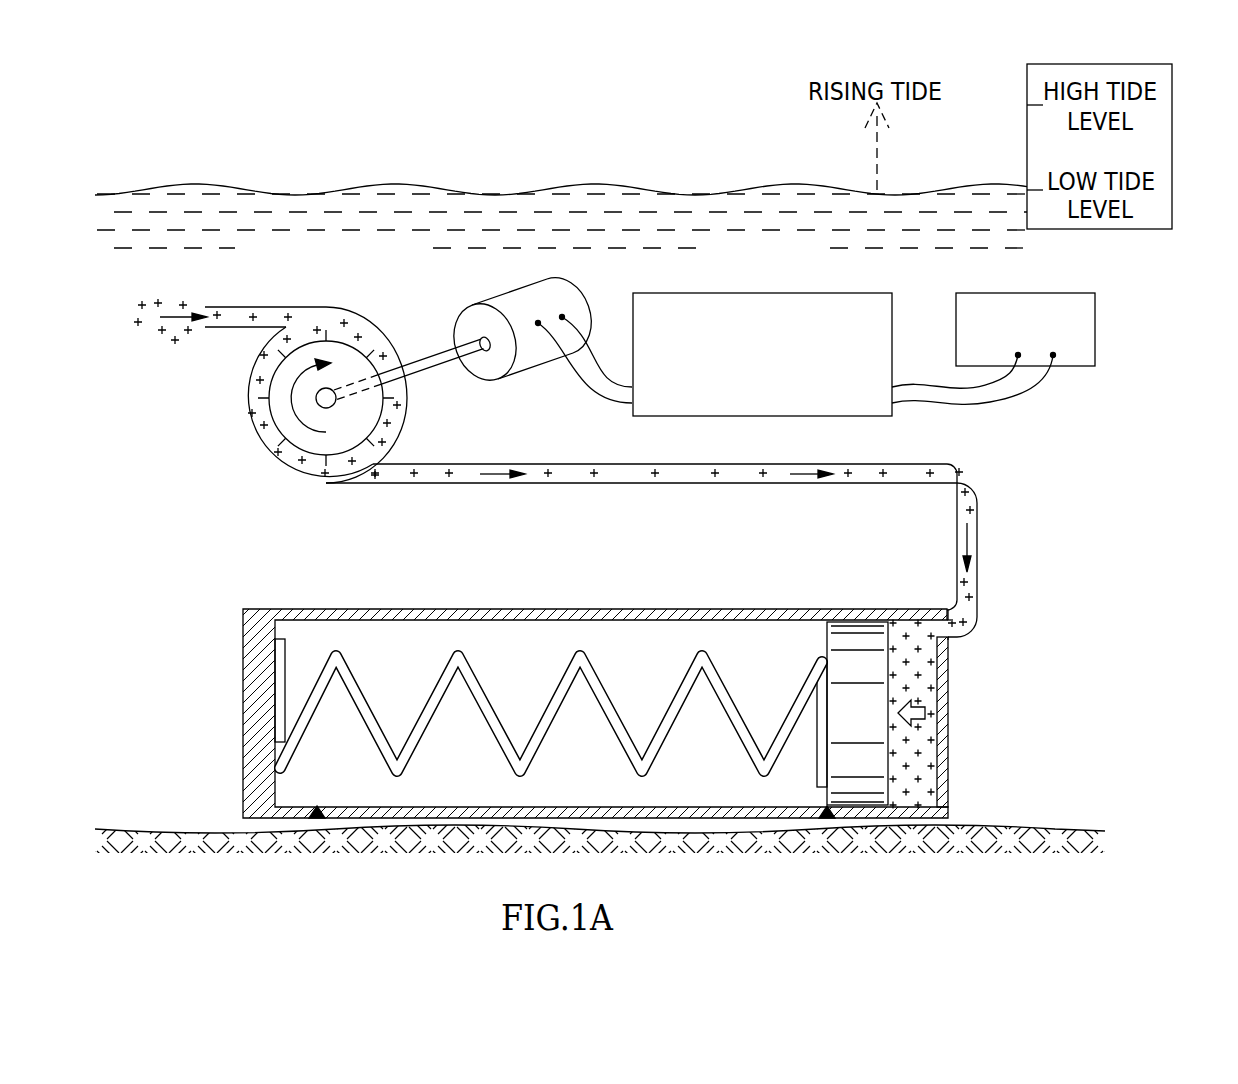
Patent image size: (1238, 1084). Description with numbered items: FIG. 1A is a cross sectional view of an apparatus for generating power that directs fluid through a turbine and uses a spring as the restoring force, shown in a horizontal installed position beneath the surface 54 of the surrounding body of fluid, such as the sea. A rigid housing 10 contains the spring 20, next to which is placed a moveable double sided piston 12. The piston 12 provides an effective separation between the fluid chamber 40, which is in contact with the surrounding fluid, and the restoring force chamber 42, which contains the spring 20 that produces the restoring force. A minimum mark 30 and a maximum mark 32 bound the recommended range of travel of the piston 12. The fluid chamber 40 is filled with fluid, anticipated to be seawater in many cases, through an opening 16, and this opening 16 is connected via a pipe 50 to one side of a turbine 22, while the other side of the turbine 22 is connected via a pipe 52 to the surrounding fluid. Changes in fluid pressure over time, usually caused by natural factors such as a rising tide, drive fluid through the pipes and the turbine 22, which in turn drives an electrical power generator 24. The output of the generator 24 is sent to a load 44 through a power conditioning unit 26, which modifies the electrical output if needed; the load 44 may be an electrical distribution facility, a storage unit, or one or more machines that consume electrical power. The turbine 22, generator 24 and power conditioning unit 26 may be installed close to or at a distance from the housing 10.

The housing 10 is at (595, 608).
The piston 12 is at (861, 632).
The opening 16 is at (940, 630).
The spring 20 is at (459, 609).
The turbine 22 is at (245, 422).
The electrical power generator 24 is at (497, 305).
The power conditioning unit 26 is at (892, 328).
The minimum mark 30 is at (827, 818).
The maximum mark 32 is at (317, 818).
The fluid chamber 40 is at (905, 632).
The restoring force chamber 42 is at (322, 632).
The load 44 is at (1095, 330).
The pipe 50 is at (703, 483).
The pipe 52 is at (275, 306).
The surface of the surrounding body of fluid 54 is at (330, 187).